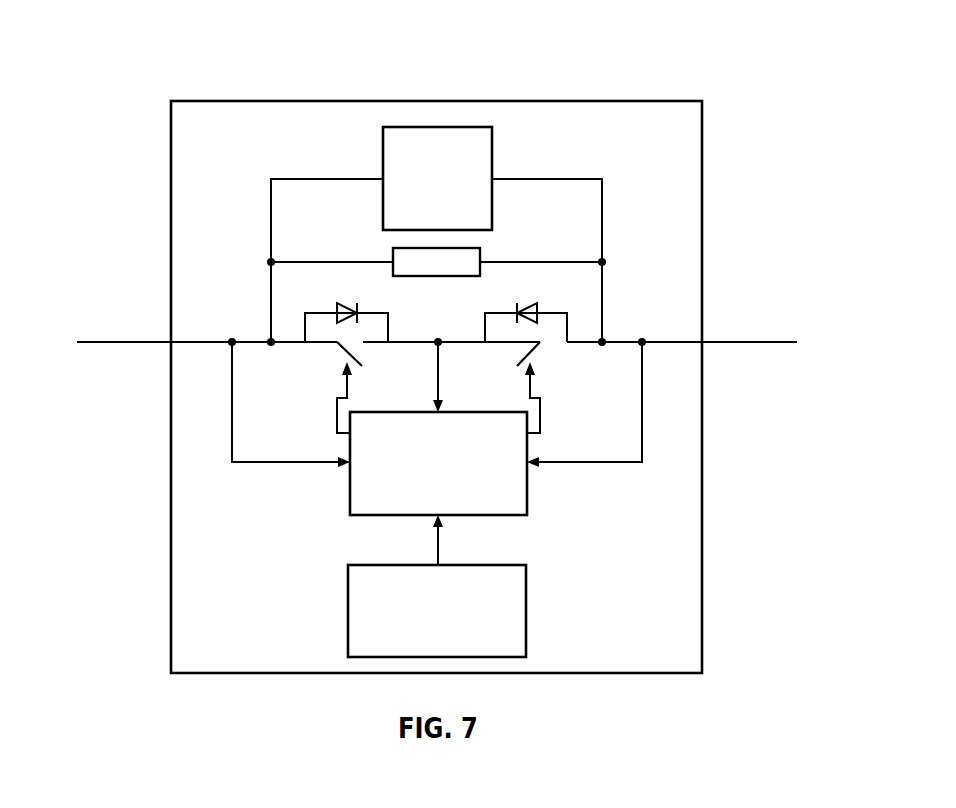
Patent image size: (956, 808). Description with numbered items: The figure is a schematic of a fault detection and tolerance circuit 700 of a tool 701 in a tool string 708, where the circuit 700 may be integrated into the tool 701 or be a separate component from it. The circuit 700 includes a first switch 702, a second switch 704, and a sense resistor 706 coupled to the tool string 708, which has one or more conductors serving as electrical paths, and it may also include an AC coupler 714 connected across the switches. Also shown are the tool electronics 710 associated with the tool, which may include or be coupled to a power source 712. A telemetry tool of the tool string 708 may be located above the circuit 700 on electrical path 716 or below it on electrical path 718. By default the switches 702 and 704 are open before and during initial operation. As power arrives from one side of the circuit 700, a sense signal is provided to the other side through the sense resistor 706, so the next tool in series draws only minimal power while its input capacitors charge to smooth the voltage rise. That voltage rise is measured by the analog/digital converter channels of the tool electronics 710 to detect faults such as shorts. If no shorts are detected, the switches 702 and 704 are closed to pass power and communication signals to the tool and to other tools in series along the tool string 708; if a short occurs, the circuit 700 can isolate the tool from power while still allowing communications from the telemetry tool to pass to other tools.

The fault detection and tolerance circuit 700 is at (709, 39).
The tool 701 is at (190, 101).
The first switch 702 is at (288, 388).
The second switch 704 is at (589, 391).
The sense resistor 706 is at (480, 254).
The tool string 708 is at (659, 342).
The tool electronics 710 is at (372, 515).
The power source 712 is at (348, 612).
The AC coupler 714 is at (492, 150).
The electrical path 716 is at (103, 342).
The electrical path 718 is at (788, 342).